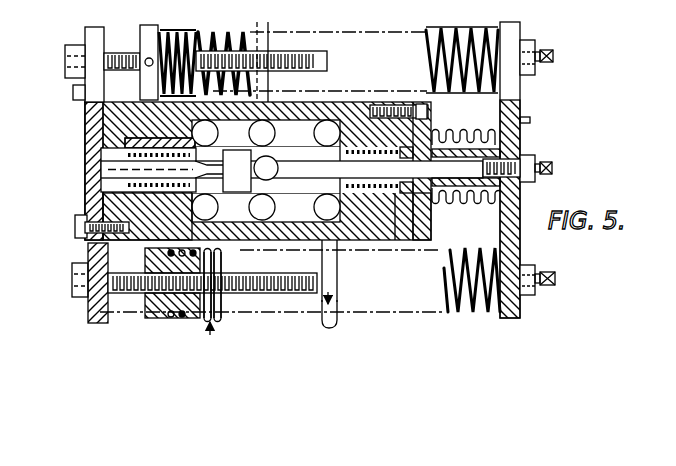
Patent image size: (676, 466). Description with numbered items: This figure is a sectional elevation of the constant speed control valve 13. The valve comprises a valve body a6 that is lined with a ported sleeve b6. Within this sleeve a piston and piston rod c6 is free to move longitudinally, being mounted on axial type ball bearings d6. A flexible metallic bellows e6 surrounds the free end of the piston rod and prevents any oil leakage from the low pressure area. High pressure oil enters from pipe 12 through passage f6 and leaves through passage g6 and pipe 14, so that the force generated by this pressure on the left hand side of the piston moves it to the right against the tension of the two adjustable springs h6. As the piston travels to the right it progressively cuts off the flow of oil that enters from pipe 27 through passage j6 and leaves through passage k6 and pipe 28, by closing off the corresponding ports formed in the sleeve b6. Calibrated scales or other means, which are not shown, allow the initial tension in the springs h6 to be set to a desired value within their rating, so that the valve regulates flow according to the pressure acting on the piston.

The constant speed control valve 13 is at (270, 184).
The pipe 12 is at (222, 327).
The pipe 14 is at (205, 27).
The pipe 27 is at (263, 24).
The pipe 28 is at (338, 323).
The valve body a6 is at (92, 115).
The ported sleeve b6 is at (145, 204).
The piston and piston rod c6 is at (241, 181).
The axial type ball bearings d6 is at (103, 160).
The flexible metallic bellows e6 is at (473, 199).
The passage f6 is at (224, 257).
The passage g6 is at (180, 110).
The adjustable springs h6 is at (457, 93).
The passage j6 is at (285, 90).
The passage k6 is at (336, 246).